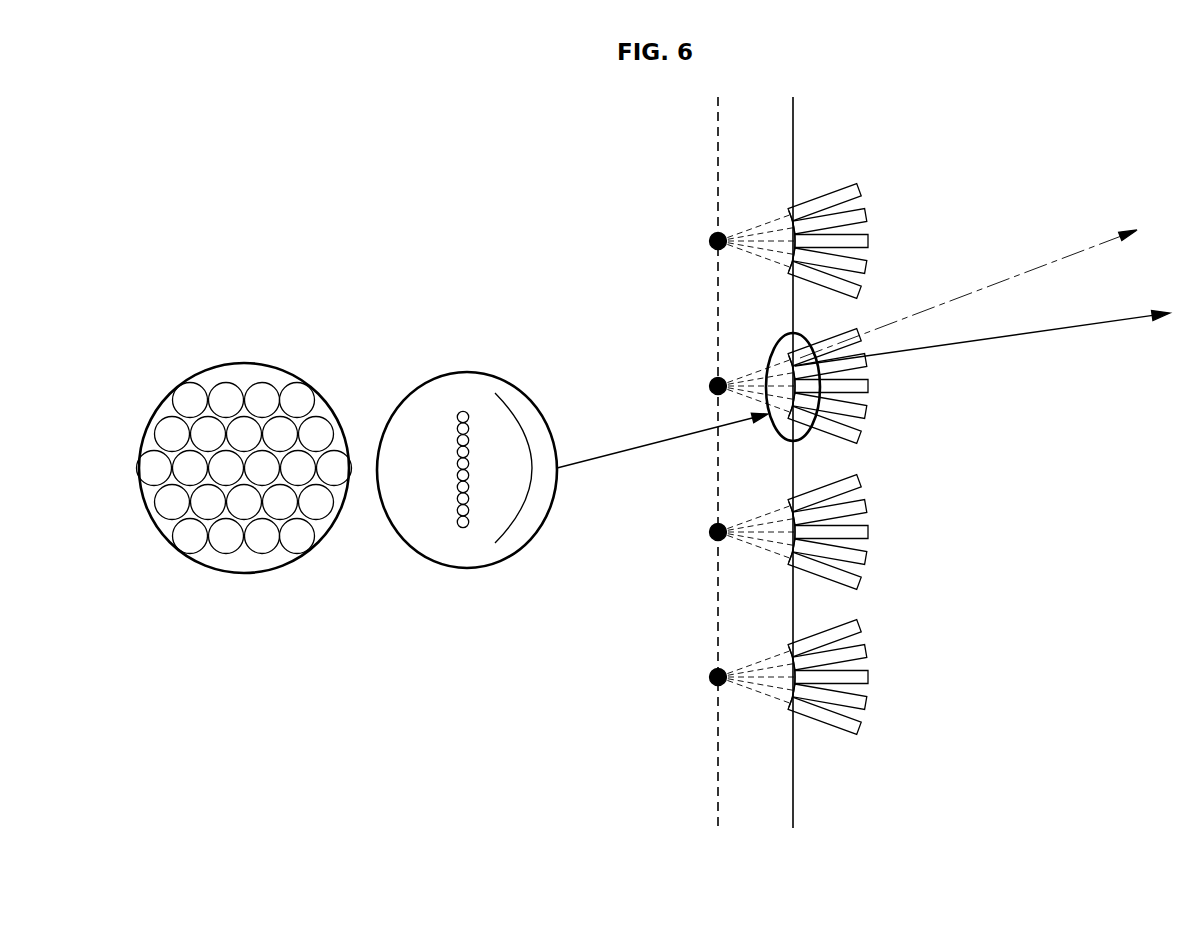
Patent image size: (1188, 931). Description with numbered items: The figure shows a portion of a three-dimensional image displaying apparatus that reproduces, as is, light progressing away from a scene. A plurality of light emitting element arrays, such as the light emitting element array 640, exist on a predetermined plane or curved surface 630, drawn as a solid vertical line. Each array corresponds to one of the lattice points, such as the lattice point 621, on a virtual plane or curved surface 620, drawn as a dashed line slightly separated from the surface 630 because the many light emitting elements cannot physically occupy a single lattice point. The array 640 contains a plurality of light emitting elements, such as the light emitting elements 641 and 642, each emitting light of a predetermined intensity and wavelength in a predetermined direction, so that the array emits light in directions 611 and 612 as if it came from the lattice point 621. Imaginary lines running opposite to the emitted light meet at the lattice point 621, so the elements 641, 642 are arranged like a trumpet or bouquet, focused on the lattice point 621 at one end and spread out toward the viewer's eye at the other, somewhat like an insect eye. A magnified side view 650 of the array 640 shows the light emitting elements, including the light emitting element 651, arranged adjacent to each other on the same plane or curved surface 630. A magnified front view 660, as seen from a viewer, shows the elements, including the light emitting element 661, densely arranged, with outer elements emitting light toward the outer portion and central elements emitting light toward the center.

The direction 611 is at (1060, 330).
The direction 612 is at (1018, 274).
The virtual plane or curved surface 620 is at (718, 138).
The lattice point 621 is at (712, 383).
The plane or curved surface 630 is at (793, 135).
The light emitting element array 640 is at (778, 343).
The light emitting element 641 is at (862, 366).
The light emitting element 642 is at (859, 328).
The magnified side view 650 is at (467, 372).
The light emitting element 651 is at (463, 528).
The magnified front view 660 is at (243, 362).
The light emitting element 661 is at (262, 537).